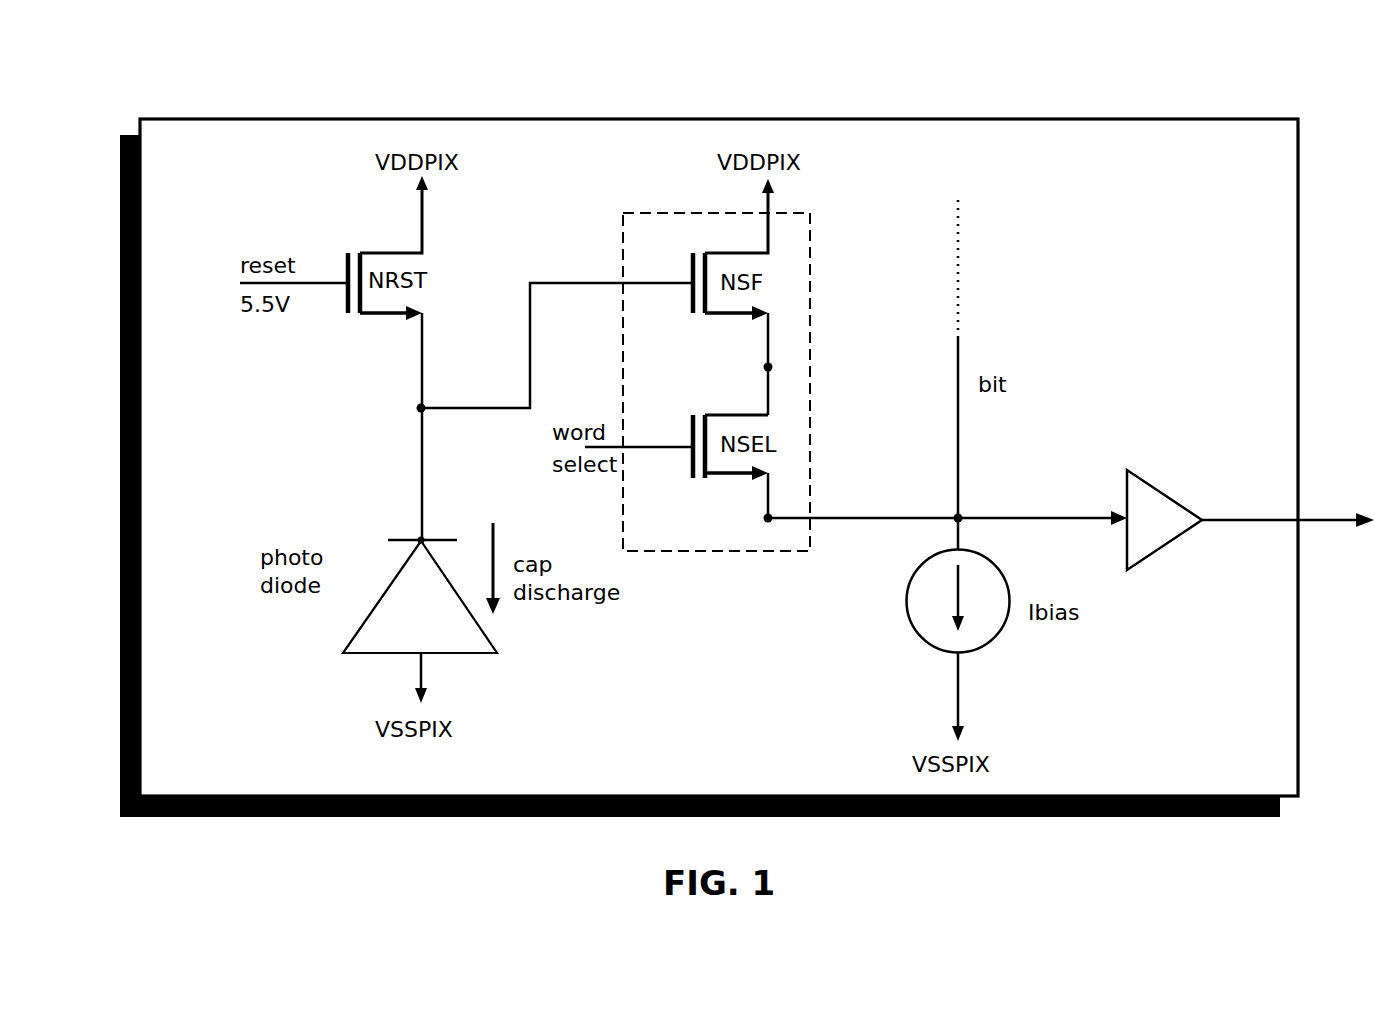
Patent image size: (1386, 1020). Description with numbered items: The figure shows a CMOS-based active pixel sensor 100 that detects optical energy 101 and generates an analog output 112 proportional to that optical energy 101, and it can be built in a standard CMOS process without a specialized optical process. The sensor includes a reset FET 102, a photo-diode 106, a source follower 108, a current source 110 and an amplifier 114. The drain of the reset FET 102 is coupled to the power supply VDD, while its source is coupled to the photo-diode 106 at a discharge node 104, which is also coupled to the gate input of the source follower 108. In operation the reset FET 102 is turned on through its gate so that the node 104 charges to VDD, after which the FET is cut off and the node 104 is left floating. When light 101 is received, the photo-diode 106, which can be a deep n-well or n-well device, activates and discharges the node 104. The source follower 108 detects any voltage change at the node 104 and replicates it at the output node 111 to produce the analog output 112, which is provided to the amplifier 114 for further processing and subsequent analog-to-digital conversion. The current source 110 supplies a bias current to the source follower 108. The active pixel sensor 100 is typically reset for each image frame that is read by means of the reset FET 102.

The active pixel sensor 100 is at (108, 98).
The optical energy 101 is at (392, 568).
The reset FET 102 is at (387, 250).
The discharge node 104 is at (416, 406).
The photo-diode 106 is at (476, 654).
The source follower 108 is at (813, 247).
The current source 110 is at (911, 630).
The output node 111 is at (962, 516).
The analog output 112 is at (1035, 516).
The amplifier 114 is at (1131, 481).